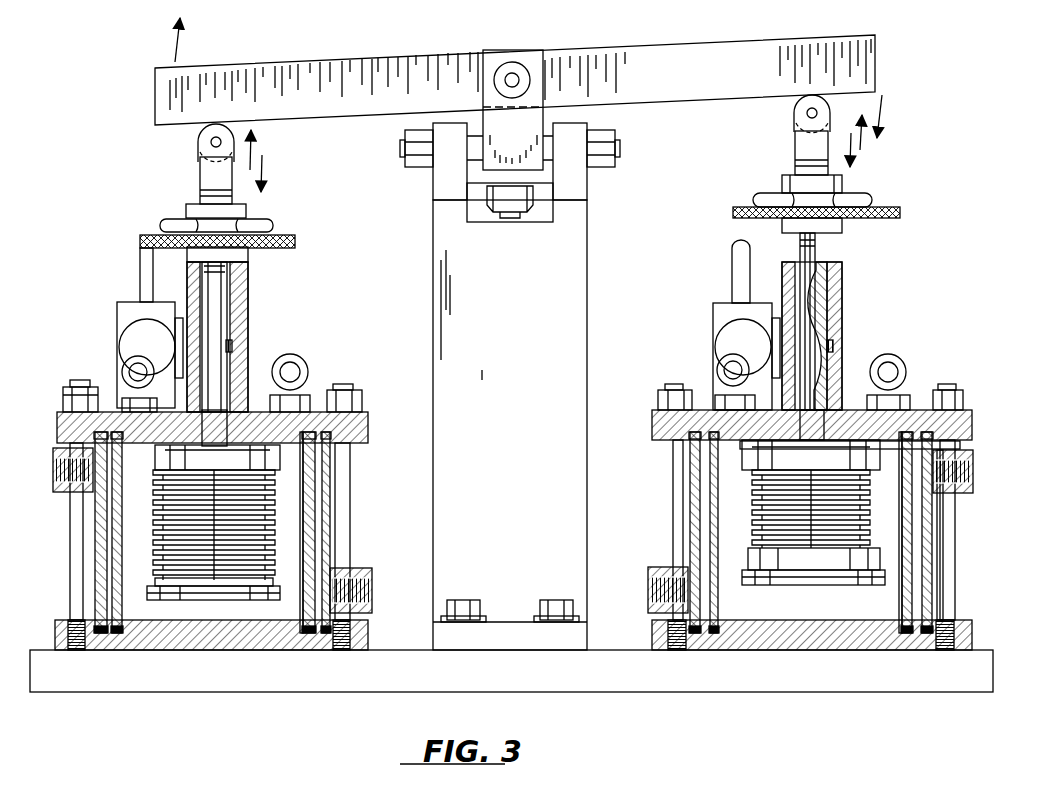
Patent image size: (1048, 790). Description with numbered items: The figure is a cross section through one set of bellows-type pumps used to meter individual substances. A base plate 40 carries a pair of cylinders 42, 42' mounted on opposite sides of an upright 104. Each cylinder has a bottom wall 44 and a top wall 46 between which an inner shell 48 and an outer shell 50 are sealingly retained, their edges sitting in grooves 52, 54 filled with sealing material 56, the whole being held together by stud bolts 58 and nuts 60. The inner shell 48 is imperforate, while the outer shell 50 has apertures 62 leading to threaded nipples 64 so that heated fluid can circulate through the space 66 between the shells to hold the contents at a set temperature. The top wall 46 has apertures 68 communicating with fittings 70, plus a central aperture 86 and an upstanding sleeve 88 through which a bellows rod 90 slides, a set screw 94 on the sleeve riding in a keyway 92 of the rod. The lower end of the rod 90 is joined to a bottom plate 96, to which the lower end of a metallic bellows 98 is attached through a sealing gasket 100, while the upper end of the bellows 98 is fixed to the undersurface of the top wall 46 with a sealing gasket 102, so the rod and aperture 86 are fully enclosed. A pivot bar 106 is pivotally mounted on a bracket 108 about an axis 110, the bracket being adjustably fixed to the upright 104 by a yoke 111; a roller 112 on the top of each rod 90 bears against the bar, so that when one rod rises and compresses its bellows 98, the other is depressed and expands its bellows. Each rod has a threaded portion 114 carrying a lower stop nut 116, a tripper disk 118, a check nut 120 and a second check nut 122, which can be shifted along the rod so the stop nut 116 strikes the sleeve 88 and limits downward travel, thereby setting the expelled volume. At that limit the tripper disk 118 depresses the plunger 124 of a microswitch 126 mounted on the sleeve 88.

The base plate 40 is at (752, 686).
The cylinder 42 is at (356, 528).
The cylinder 42' is at (963, 528).
The bottom wall 44 is at (362, 630).
The top wall 46 is at (368, 425).
The inner shell 48 is at (113, 545).
The outer shell 50 is at (103, 580).
The groove 52 is at (312, 430).
The groove 54 is at (935, 440).
The sealing material 56 is at (101, 634).
The stud bolt 58 is at (955, 520).
The nut 60 is at (65, 395).
The aperture 62 is at (105, 480).
The threaded nipple 64 is at (55, 460).
The space 66 is at (314, 490).
The aperture 68 is at (516, 434).
The fitting 70 is at (133, 372).
The central aperture 86 is at (511, 425).
The sleeve 88 is at (840, 320).
The bellows rod 90 is at (222, 290).
The keyway 92 is at (835, 300).
The set screw 94 is at (233, 346).
The bottom plate 96 is at (838, 586).
The metallic bellows 98 is at (153, 487).
The sealing gasket 100 is at (770, 586).
The sealing gasket 102 is at (745, 450).
The upright 104 is at (580, 285).
The pivot bar 106 is at (700, 32).
The bracket 108 is at (535, 115).
The axis 110 is at (519, 78).
The yoke 111 is at (582, 188).
The roller 112 is at (198, 142).
The rod portion 114 is at (205, 195).
The lower stop nut 116 is at (245, 253).
The tripper disk 118 is at (140, 240).
The check nut 120 is at (270, 225).
The second check nut 122 is at (245, 210).
The plunger 124 is at (140, 265).
The microswitch 126 is at (120, 312).